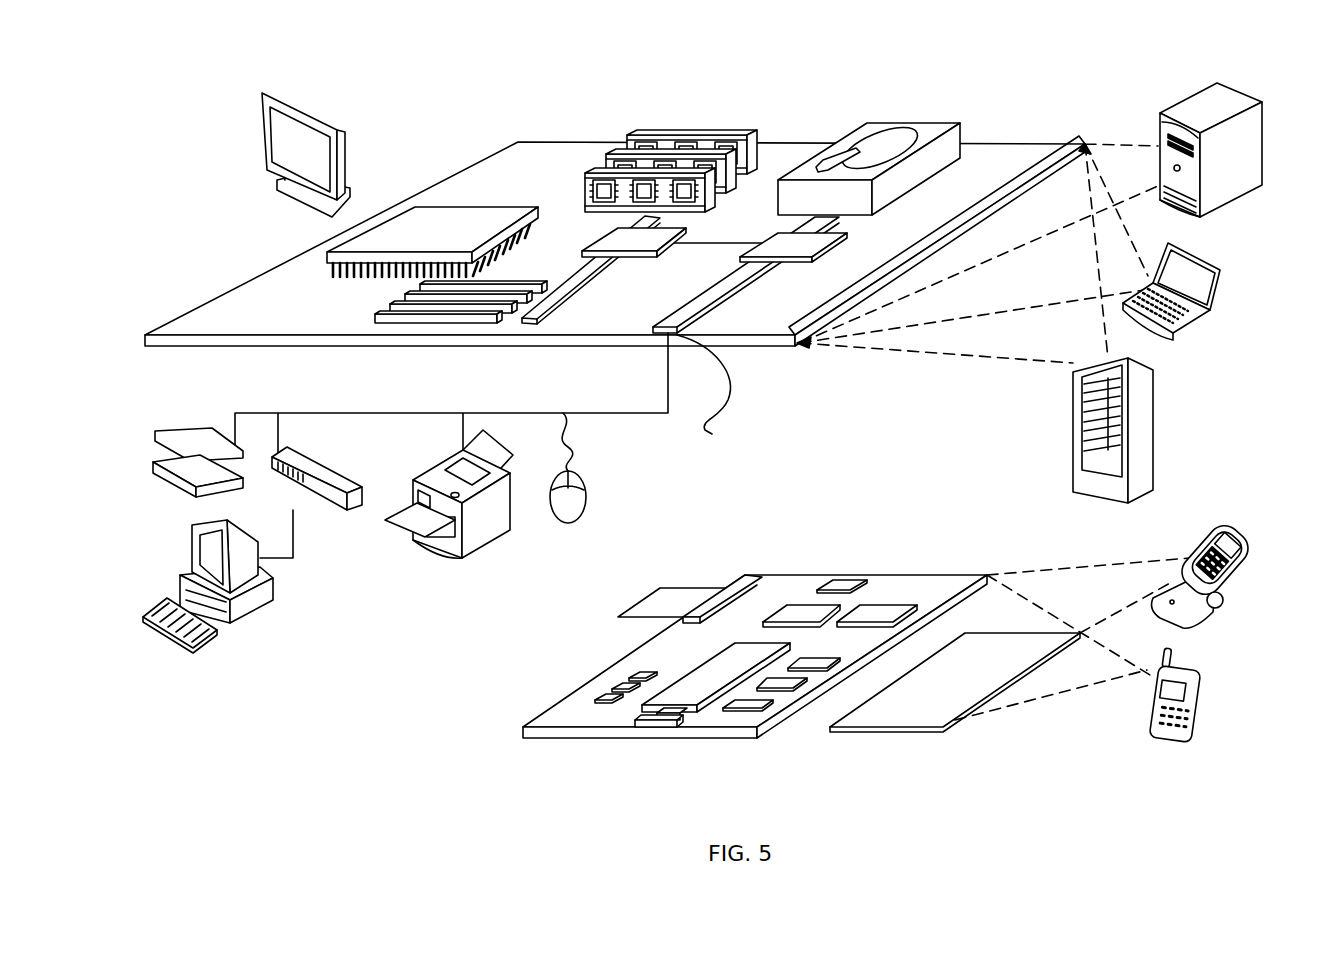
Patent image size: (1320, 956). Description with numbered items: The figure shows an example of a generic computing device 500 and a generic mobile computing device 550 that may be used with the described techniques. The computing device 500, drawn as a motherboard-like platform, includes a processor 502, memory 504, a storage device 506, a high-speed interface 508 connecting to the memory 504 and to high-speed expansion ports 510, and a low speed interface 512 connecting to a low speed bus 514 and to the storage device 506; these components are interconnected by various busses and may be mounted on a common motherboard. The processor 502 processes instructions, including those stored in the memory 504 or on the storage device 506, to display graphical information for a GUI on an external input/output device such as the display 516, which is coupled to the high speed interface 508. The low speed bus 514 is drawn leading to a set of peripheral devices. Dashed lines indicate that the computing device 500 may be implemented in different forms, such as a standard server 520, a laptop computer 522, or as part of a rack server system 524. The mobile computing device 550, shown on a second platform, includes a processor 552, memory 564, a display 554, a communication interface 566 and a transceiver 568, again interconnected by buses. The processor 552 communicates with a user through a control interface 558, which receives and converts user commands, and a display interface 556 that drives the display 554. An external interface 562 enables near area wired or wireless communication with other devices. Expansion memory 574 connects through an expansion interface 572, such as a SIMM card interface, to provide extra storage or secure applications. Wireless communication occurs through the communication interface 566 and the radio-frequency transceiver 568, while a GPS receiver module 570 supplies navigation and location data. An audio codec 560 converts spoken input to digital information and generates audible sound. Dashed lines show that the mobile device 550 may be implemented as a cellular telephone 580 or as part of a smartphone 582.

The computing device 500 is at (443, 110).
The processor 502 is at (327, 257).
The memory 504 is at (640, 142).
The storage device 506 is at (855, 126).
The high-speed interface 508 is at (613, 237).
The high-speed expansion ports 510 is at (395, 309).
The low speed interface 512 is at (777, 242).
The low speed bus 514 is at (712, 434).
The display 516 is at (264, 93).
The standard server 520 is at (1160, 128).
The laptop computer 522 is at (1221, 268).
The rack server system 524 is at (1073, 455).
The mobile computing device 550 is at (490, 748).
The processor 552 is at (690, 698).
The display 554 is at (920, 710).
The display interface 556 is at (757, 708).
The control interface 558 is at (780, 690).
The audio codec 560 is at (803, 670).
The external interface 562 is at (657, 728).
The memory 564 is at (612, 697).
The communication interface 566 is at (803, 616).
The transceiver 568 is at (878, 608).
The GPS receiver module 570 is at (845, 585).
The expansion interface 572 is at (728, 587).
The expansion memory 574 is at (660, 588).
The cellular telephone 580 is at (1202, 532).
The smartphone 582 is at (1147, 712).